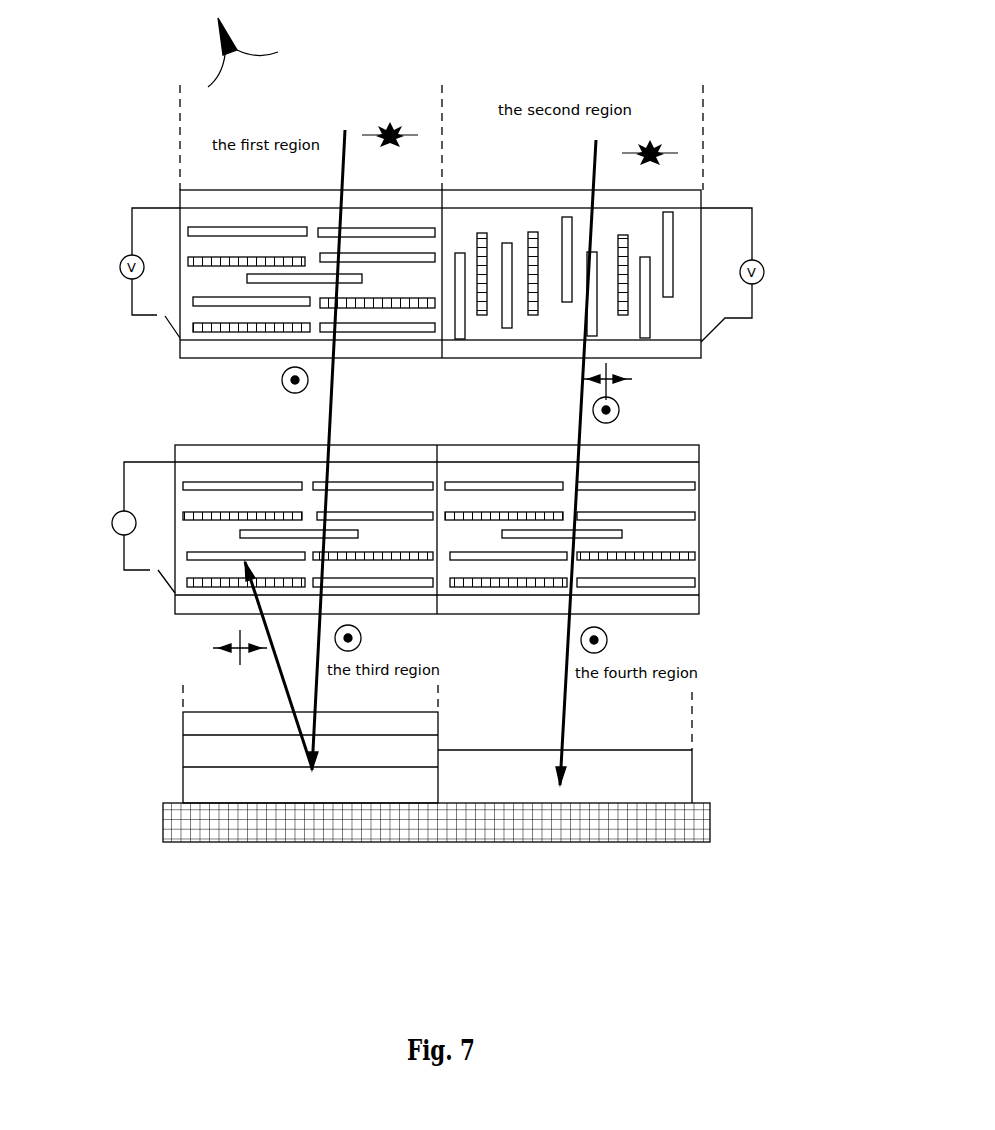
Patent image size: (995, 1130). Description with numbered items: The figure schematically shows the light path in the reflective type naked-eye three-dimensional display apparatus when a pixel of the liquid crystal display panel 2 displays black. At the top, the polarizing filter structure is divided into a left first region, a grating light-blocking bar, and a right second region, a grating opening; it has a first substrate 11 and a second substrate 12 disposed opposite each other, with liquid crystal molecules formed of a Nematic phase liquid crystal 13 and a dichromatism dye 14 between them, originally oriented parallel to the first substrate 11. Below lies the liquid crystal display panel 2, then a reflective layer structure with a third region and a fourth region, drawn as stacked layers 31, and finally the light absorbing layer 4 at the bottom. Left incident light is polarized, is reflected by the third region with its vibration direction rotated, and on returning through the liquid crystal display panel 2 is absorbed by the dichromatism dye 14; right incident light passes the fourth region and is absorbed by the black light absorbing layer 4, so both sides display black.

The first substrate 11 is at (180, 195).
The second substrate 12 is at (180, 348).
The Nematic phase liquid crystal 13 is at (188, 228).
The dichromatism dye 14 is at (188, 260).
The liquid crystal display panel 2 is at (699, 530).
The retardation layer 31 is at (207, 717).
The light absorbing layer 4 is at (163, 807).